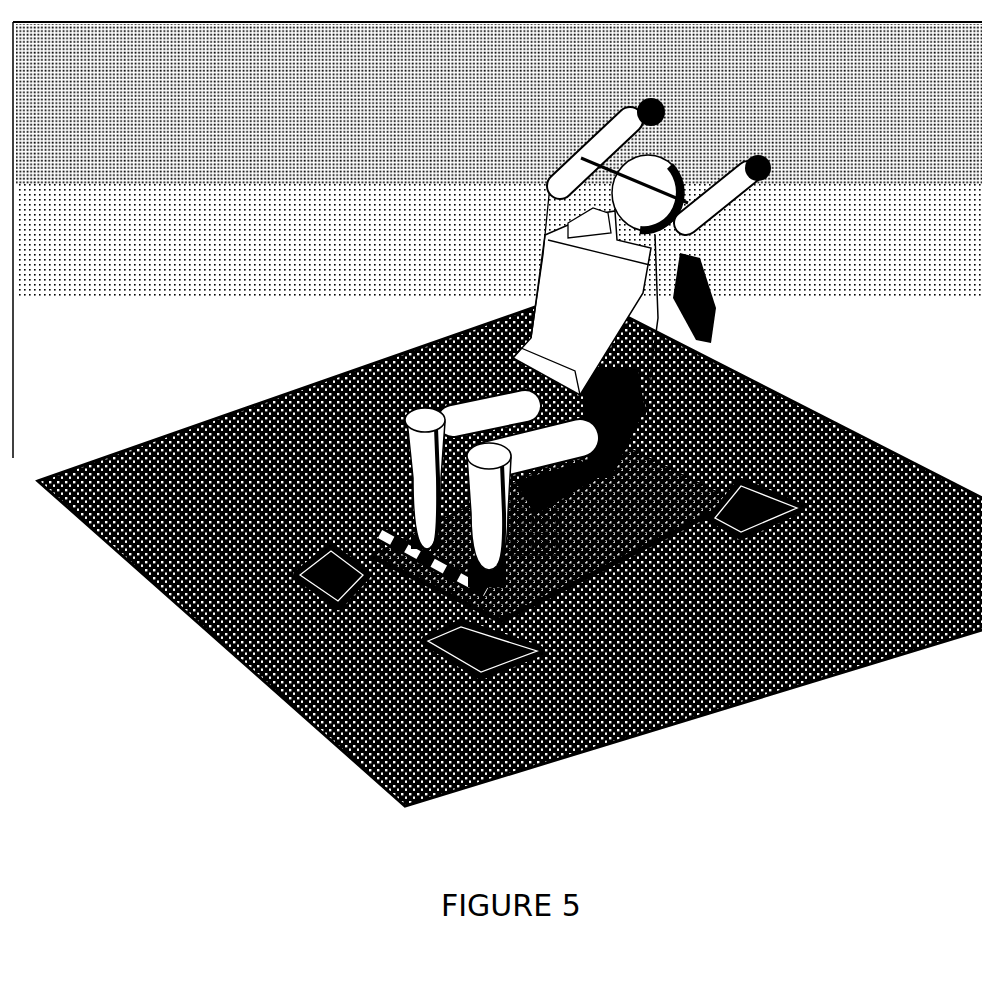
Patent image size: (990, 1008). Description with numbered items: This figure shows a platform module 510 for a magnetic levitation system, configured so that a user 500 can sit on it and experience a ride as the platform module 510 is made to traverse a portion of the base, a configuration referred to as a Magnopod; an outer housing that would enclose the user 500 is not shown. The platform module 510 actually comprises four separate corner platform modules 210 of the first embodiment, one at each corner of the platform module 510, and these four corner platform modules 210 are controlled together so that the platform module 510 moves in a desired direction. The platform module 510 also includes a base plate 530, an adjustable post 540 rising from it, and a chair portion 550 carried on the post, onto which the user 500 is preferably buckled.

The platform module 210 is at (510, 549).
The user 500 is at (652, 241).
The platform module 510 is at (593, 480).
The base plate 530 is at (528, 557).
The adjustable post 540 is at (553, 537).
The chair portion 550 is at (610, 470).